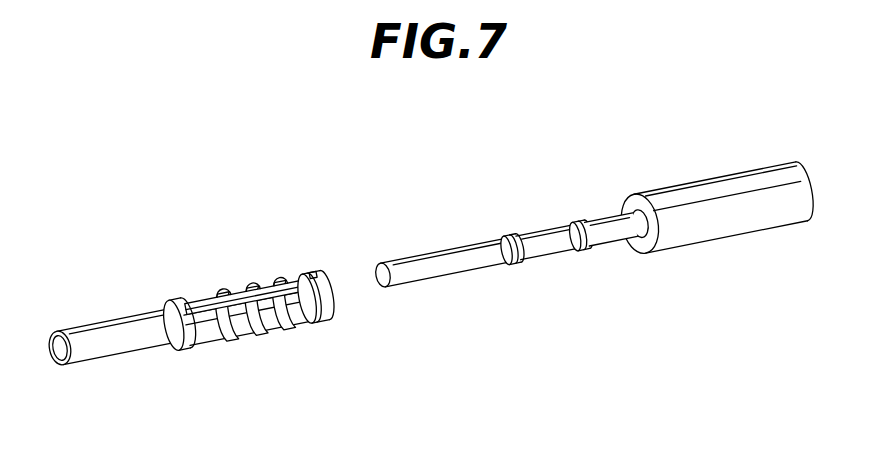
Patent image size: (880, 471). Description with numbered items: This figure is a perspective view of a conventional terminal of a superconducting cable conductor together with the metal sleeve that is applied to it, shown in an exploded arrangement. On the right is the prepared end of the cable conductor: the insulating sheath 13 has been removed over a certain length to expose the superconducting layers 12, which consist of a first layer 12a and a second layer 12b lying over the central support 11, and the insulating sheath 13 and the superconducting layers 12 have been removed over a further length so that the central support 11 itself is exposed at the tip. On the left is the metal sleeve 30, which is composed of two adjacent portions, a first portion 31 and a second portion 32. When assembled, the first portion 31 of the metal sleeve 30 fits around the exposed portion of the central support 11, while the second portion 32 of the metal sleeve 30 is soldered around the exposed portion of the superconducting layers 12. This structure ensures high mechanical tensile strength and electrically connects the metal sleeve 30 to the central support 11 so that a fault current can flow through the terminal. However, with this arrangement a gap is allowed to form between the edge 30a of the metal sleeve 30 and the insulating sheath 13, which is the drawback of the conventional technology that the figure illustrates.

The central support 11 is at (453, 265).
The superconducting layers 12 is at (564, 298).
The first layer 12a is at (547, 250).
The second layer 12b is at (607, 238).
The insulating sheath 13 is at (713, 228).
The metal sleeve 30 is at (270, 297).
The edge of the metal sleeve 30a is at (333, 307).
The first portion 31 is at (130, 343).
The second portion 32 is at (240, 323).